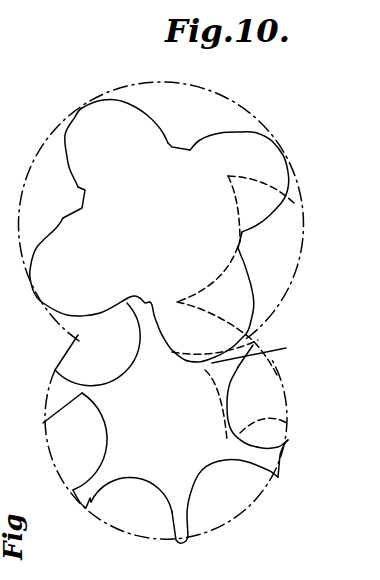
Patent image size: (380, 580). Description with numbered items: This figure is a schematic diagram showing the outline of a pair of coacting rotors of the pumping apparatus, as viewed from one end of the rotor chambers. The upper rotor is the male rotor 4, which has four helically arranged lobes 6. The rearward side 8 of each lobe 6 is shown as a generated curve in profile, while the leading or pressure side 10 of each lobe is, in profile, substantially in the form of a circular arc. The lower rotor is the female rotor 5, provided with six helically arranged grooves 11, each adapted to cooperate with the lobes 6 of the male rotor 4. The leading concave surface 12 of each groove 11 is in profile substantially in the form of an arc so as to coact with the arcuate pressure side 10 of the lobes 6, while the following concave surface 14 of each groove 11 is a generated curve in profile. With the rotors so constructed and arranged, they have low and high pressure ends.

The male rotor 4 is at (168, 247).
The female rotor 5 is at (163, 436).
The lobe 6 is at (74, 113).
The rearward side 8 is at (65, 152).
The leading or pressure side 10 is at (138, 103).
The groove 11 is at (232, 407).
The leading concave surface 12 is at (198, 365).
The following concave surface 14 is at (50, 412).